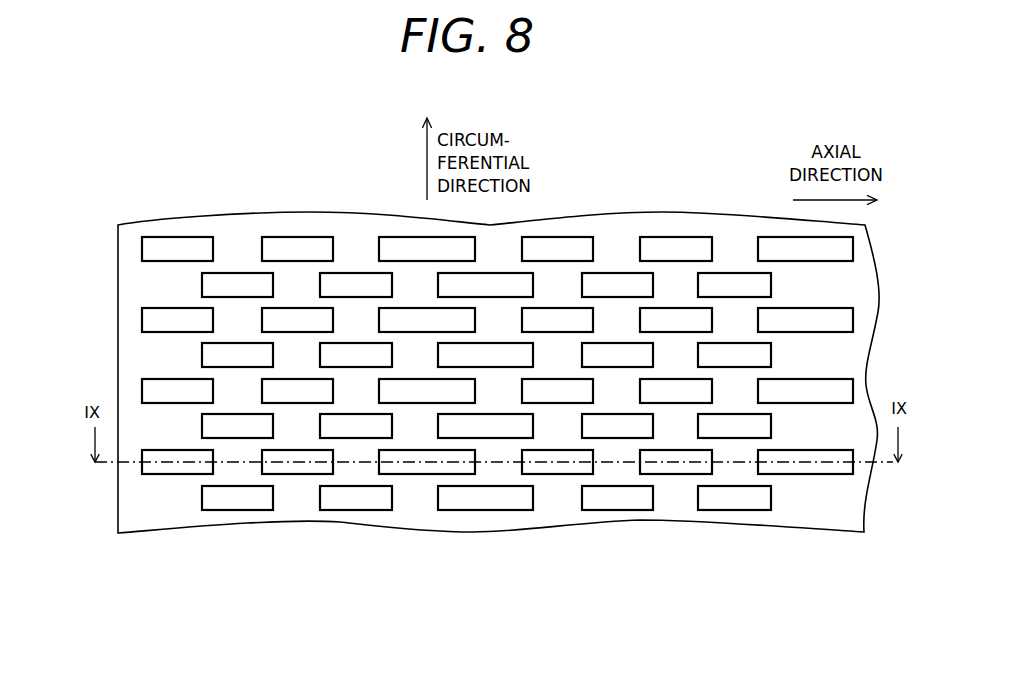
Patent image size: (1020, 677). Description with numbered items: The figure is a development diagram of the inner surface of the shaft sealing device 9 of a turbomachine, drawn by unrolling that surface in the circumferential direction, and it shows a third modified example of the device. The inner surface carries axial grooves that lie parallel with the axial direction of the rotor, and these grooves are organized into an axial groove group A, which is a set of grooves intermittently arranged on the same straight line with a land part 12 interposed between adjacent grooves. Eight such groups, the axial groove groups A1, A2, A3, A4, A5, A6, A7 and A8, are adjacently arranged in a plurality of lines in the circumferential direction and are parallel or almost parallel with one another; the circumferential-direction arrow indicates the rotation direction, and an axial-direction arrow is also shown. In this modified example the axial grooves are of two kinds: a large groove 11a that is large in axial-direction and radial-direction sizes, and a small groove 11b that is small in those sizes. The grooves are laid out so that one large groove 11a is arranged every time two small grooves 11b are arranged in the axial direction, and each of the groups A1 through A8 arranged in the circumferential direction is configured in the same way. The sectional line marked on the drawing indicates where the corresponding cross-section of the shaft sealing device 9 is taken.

The shaft sealing device 9 is at (665, 212).
The large groove 11a is at (400, 237).
The small groove 11b is at (188, 237).
The land part 12 is at (240, 469).
The axial groove group A is at (56, 215).
The axial groove group A1 is at (200, 498).
The axial groove group A2 is at (140, 463).
The axial groove group A3 is at (200, 426).
The axial groove group A4 is at (140, 391).
The axial groove group A5 is at (200, 355).
The axial groove group A6 is at (140, 321).
The axial groove group A7 is at (200, 285).
The axial groove group A8 is at (140, 251).